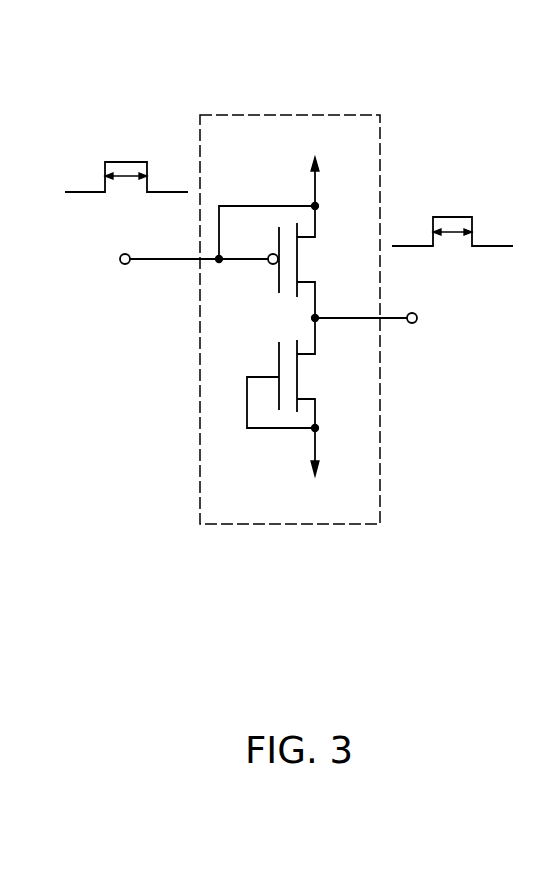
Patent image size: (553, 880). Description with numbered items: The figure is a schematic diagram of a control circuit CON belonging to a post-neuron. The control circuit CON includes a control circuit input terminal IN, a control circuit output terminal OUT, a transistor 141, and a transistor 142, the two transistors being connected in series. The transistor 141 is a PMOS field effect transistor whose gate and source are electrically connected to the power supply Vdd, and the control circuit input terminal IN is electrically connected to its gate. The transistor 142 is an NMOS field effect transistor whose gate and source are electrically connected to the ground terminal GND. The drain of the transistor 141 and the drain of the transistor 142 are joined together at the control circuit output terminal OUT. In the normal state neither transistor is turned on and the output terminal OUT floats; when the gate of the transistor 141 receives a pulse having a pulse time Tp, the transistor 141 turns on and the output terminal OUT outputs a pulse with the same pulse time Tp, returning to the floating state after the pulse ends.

The transistor 141 is at (310, 262).
The transistor 142 is at (299, 375).
The control circuit CON is at (288, 115).
The control circuit input terminal IN is at (175, 259).
The control circuit output terminal OUT is at (400, 318).
The power supply Vdd is at (312, 166).
The ground terminal GND is at (313, 470).
The pulse time Tp is at (289, 223).